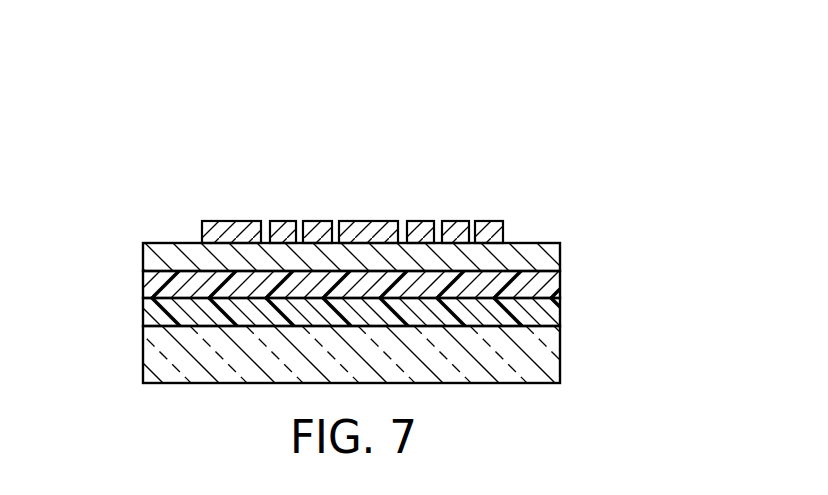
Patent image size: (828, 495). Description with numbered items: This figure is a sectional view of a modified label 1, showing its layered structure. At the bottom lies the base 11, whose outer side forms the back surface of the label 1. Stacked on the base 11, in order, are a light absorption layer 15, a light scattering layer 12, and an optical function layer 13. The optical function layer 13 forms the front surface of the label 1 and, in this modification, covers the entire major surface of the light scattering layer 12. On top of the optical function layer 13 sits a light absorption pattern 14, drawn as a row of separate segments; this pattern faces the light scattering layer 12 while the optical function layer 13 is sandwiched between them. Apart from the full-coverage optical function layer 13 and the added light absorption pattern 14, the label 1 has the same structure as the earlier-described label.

The label 1 is at (589, 127).
The base 11 is at (561, 358).
The light scattering layer 12 is at (561, 282).
The optical function layer 13 is at (561, 253).
The light absorption pattern 14 is at (503, 229).
The light absorption layer 15 is at (561, 310).